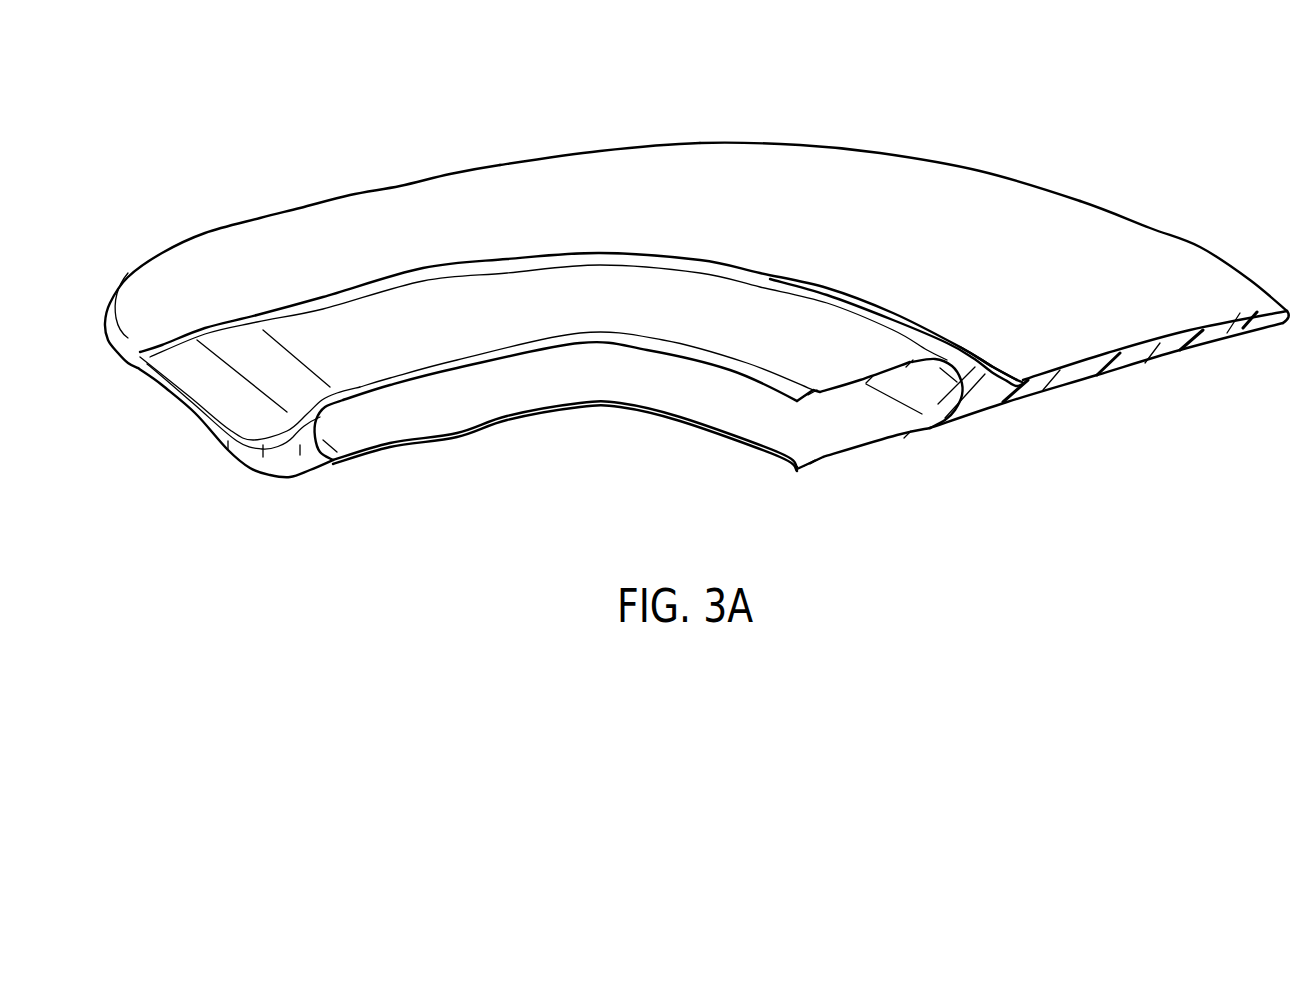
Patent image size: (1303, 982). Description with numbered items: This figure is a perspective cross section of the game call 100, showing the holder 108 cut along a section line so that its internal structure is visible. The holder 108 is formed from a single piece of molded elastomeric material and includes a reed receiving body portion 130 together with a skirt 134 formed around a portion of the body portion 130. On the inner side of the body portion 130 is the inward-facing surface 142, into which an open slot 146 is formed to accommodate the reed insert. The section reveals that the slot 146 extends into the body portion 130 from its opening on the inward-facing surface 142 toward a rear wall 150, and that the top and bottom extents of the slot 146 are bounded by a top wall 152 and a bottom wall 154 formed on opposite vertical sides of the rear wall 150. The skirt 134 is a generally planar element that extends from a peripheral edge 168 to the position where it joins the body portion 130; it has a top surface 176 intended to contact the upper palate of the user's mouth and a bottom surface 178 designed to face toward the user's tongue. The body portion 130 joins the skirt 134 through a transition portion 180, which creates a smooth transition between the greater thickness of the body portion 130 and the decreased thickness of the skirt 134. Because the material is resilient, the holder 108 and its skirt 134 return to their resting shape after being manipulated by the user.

The game call 100 is at (853, 117).
The holder 108 is at (1195, 227).
The reed receiving body portion 130 is at (677, 287).
The skirt 134 is at (617, 160).
The inward-facing surface 142 is at (457, 363).
The slot 146 is at (410, 413).
The rear wall 150 is at (963, 397).
The top wall 152 is at (723, 360).
The bottom wall 154 is at (640, 407).
The peripheral edge 168 is at (890, 153).
The top surface 176 is at (1213, 283).
The bottom surface 178 is at (1150, 360).
The transition portion 180 is at (977, 360).